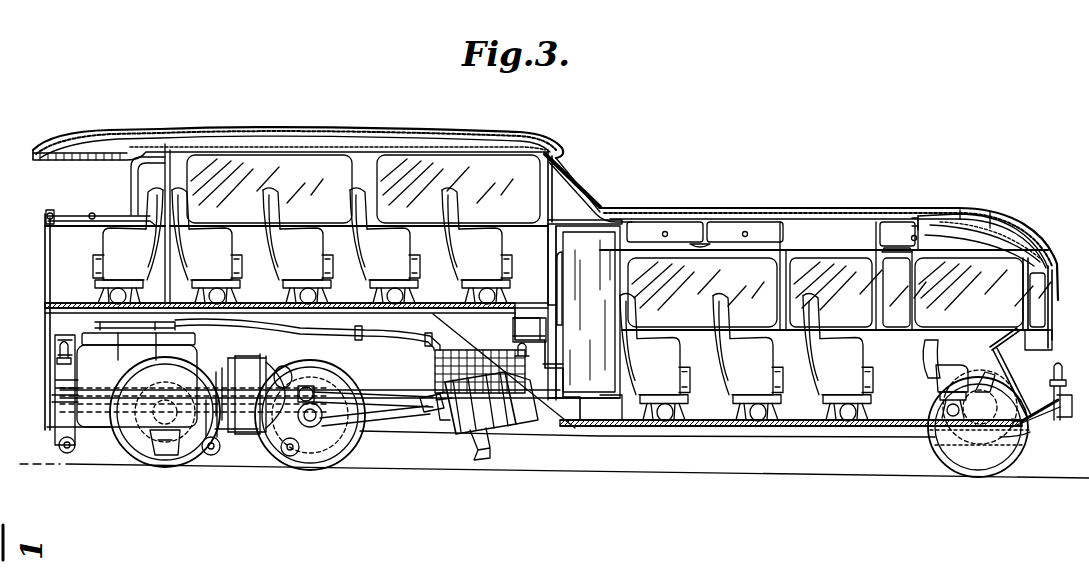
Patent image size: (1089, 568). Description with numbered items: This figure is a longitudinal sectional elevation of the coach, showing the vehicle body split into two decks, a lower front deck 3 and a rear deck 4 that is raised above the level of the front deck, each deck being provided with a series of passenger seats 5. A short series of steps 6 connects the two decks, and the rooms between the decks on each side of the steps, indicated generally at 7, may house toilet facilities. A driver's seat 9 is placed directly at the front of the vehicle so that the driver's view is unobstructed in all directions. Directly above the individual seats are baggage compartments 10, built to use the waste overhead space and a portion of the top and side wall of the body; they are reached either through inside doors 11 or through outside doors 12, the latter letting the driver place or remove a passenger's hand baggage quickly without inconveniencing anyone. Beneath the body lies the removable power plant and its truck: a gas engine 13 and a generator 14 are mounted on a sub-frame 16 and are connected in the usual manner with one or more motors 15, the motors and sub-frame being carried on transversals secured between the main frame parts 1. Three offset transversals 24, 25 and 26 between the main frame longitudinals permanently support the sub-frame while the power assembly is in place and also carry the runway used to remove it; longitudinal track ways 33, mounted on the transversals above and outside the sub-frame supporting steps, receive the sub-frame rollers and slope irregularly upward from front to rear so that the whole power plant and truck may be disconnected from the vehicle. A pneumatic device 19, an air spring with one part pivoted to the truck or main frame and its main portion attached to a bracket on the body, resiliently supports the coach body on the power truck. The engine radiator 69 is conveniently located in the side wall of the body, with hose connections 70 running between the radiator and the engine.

The main frame parts 1 is at (375, 396).
The deck 3 is at (722, 426).
The rear deck 4 is at (444, 318).
The passenger seats 5 is at (485, 252).
The steps 6 is at (526, 342).
The toilet facilities rooms 7 is at (562, 258).
The driver's seat 9 is at (964, 376).
The baggage compartments 10 is at (916, 230).
The inside doors 11 is at (897, 226).
The outside doors 12 is at (945, 236).
The gas engine 13 is at (176, 350).
The generator 14 is at (252, 372).
The motors 15 is at (452, 390).
The sub-frame 16 is at (312, 392).
The pneumatic device 19 is at (58, 355).
The offset transversal 24 is at (282, 449).
The offset transversal 25 is at (217, 449).
The offset transversal 26 is at (75, 448).
The longitudinal track ways 33 is at (56, 400).
The engine radiator 69 is at (445, 360).
The hose connections 70 is at (386, 332).